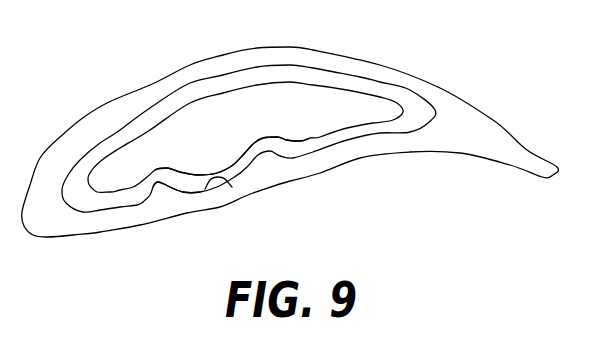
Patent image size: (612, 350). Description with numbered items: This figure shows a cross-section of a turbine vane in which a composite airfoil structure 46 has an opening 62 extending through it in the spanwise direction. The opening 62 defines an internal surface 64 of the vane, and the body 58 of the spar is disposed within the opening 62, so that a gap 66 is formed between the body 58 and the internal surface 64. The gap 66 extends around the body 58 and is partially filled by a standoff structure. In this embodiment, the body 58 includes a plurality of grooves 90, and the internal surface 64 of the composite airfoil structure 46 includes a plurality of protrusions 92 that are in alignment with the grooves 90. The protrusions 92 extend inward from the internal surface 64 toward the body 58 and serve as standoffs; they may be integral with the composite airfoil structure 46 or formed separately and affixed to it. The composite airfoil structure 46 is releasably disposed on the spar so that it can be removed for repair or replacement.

The composite airfoil structure 46 is at (440, 87).
The opening 62 is at (137, 113).
The body 58 is at (203, 110).
The grooves 90 is at (160, 167).
The protrusions 92 is at (153, 187).
The internal surface 64 is at (226, 178).
The gap 66 is at (293, 105).